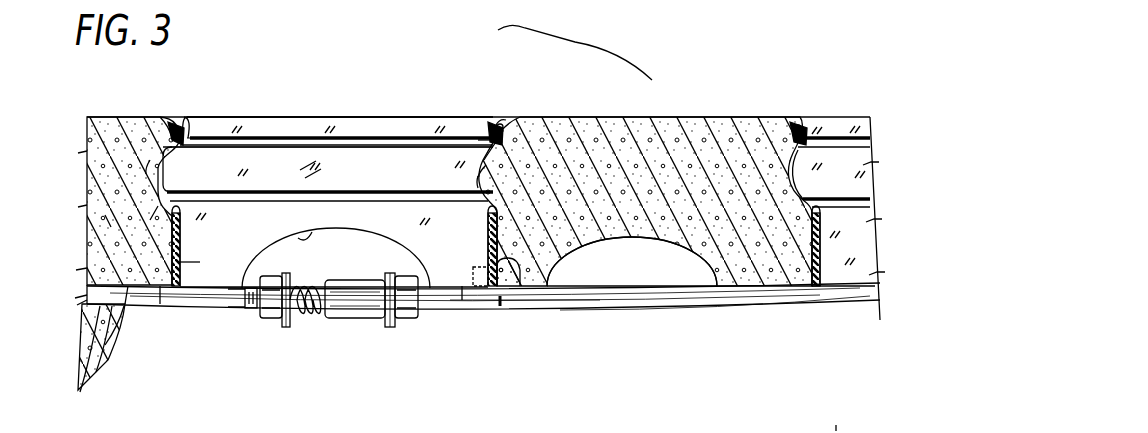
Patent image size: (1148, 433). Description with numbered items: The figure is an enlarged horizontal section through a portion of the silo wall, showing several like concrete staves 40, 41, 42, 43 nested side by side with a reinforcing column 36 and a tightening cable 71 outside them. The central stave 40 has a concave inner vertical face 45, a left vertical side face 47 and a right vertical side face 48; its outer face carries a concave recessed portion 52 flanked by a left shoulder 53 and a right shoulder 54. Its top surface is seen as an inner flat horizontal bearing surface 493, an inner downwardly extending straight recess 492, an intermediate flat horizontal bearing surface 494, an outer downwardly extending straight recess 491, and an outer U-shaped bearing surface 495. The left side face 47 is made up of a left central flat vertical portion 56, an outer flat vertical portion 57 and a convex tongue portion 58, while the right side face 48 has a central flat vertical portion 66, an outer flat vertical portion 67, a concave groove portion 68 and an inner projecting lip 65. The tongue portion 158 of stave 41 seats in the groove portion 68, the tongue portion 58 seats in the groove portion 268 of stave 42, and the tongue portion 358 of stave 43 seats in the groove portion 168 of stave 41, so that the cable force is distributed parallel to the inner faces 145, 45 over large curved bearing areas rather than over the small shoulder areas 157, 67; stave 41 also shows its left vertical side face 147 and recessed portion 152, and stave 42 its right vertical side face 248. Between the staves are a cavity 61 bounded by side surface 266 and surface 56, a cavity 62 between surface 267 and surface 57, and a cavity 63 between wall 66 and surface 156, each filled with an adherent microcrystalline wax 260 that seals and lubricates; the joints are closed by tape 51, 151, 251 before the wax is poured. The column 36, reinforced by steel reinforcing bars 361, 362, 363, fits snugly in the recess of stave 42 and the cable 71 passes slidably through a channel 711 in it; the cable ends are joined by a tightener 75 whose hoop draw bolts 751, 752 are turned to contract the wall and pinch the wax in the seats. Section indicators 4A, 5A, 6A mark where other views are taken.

The column 36 is at (90, 270).
The stave 40 is at (344, 121).
The stave 41 is at (635, 114).
The stave 42 is at (110, 108).
The stave 43 is at (830, 128).
The inner vertical face 45 is at (422, 125).
The left vertical side face 47 is at (183, 230).
The right vertical side face 48 is at (488, 234).
The outer downwardly extending straight recess 491 is at (300, 188).
The inner downwardly extending straight recess 492 is at (283, 125).
The inner flat horizontal bearing surface 493 is at (289, 200).
The intermediate flat horizontal bearing surface 494 is at (353, 165).
The outer flat horizontal U-shaped bearing surface 495 is at (314, 238).
The tape 51 is at (501, 122).
The recessed portion 52 is at (358, 226).
The left shoulder 53 is at (232, 300).
The right shoulder 54 is at (462, 300).
The left central flat vertical portion 56 is at (185, 132).
The outer flat vertical portion 57 is at (185, 264).
The tongue portion 58 is at (165, 184).
The cavity 61 is at (174, 122).
The cavity 62 is at (171, 296).
The cavity 63 is at (485, 131).
The lip 65 is at (500, 122).
The central flat vertical portion 66 is at (488, 138).
The outer flat vertical portion 67 is at (478, 262).
The groove portion 68 is at (476, 178).
The tightening cable 71 is at (660, 312).
The tightener 75 is at (330, 321).
The inner face 145 is at (710, 130).
The left vertical side face 147 is at (575, 49).
The tape 151 is at (805, 128).
The recessed portion 152 is at (632, 238).
The central flat vertical portion 156 is at (505, 160).
The outer flat vertical portion 157 is at (505, 290).
The tongue portion 158 is at (478, 172).
The groove portion 168 is at (772, 124).
The right vertical side face 248 is at (166, 236).
The tape 251 is at (807, 290).
The wax 260 is at (183, 120).
The side surface 266 is at (164, 122).
The outer flat vertical portion 267 is at (130, 292).
The groove portion 268 is at (150, 162).
The tongue portion 358 is at (800, 185).
The steel reinforcing bar 361 is at (90, 393).
The steel reinforcing bar 362 is at (114, 328).
The steel reinforcing bar 363 is at (120, 313).
The channel 711 is at (85, 296).
The hoop draw bolt 751 is at (272, 320).
The hoop draw bolt 752 is at (404, 320).
The section view indicator 4A is at (822, 340).
The section view indicator 5A is at (487, 298).
The section view indicator 6A is at (833, 48).